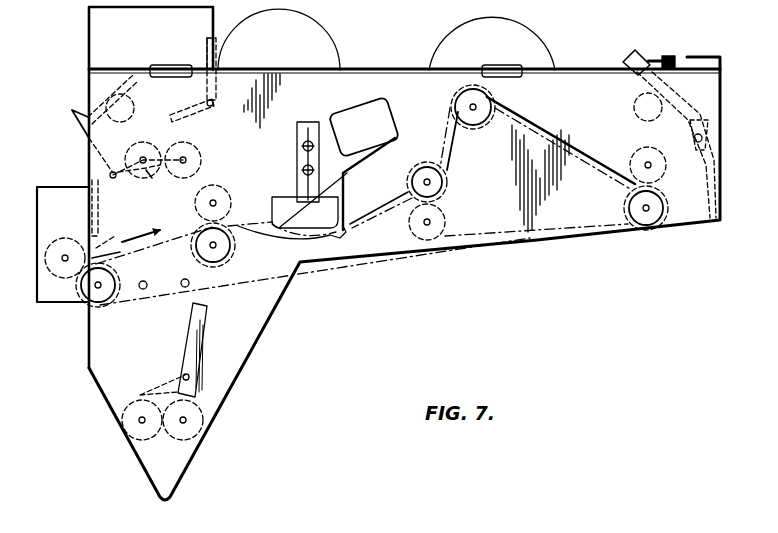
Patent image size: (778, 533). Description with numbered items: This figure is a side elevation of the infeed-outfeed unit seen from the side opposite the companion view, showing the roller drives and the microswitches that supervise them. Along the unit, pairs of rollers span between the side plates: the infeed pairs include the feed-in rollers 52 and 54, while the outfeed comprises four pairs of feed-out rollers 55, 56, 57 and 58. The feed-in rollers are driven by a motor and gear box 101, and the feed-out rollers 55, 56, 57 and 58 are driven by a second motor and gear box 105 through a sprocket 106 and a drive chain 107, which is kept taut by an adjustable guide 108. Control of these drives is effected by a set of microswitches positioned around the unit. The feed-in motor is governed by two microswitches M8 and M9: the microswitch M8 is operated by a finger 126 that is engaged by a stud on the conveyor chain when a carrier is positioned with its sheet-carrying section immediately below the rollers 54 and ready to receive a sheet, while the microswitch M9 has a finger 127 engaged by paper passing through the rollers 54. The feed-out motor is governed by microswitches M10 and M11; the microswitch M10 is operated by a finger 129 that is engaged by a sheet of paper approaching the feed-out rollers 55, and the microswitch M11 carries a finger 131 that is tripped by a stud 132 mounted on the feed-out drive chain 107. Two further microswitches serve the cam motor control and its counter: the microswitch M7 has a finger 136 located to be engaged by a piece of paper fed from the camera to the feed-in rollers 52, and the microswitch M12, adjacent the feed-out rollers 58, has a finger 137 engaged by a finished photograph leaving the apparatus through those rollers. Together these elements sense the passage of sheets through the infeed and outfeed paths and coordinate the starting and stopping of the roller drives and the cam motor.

The microswitch M7 is at (210, 58).
The microswitch M8 is at (107, 97).
The microswitch M9 is at (207, 317).
The microswitch M10 is at (705, 43).
The microswitch M11 is at (364, 127).
The microswitch M12 is at (92, 222).
The feed-in rollers 52 is at (196, 146).
The feed-in rollers 54 is at (187, 440).
The feed-out rollers 55 is at (632, 160).
The feed-out rollers 56 is at (443, 218).
The feed-out rollers 57 is at (238, 230).
The feed-out rollers 58 is at (61, 281).
The motor and gear box 101 is at (322, 55).
The motor and gear box 105 is at (528, 40).
The sprocket 106 is at (464, 104).
The drive chain 107 is at (563, 137).
The adjustable guide 108 is at (272, 197).
The finger 126 is at (147, 172).
The finger 127 is at (150, 392).
The finger 129 is at (711, 221).
The finger 131 is at (348, 190).
The stud 132 is at (350, 228).
The finger 136 is at (172, 117).
The finger 137 is at (95, 248).